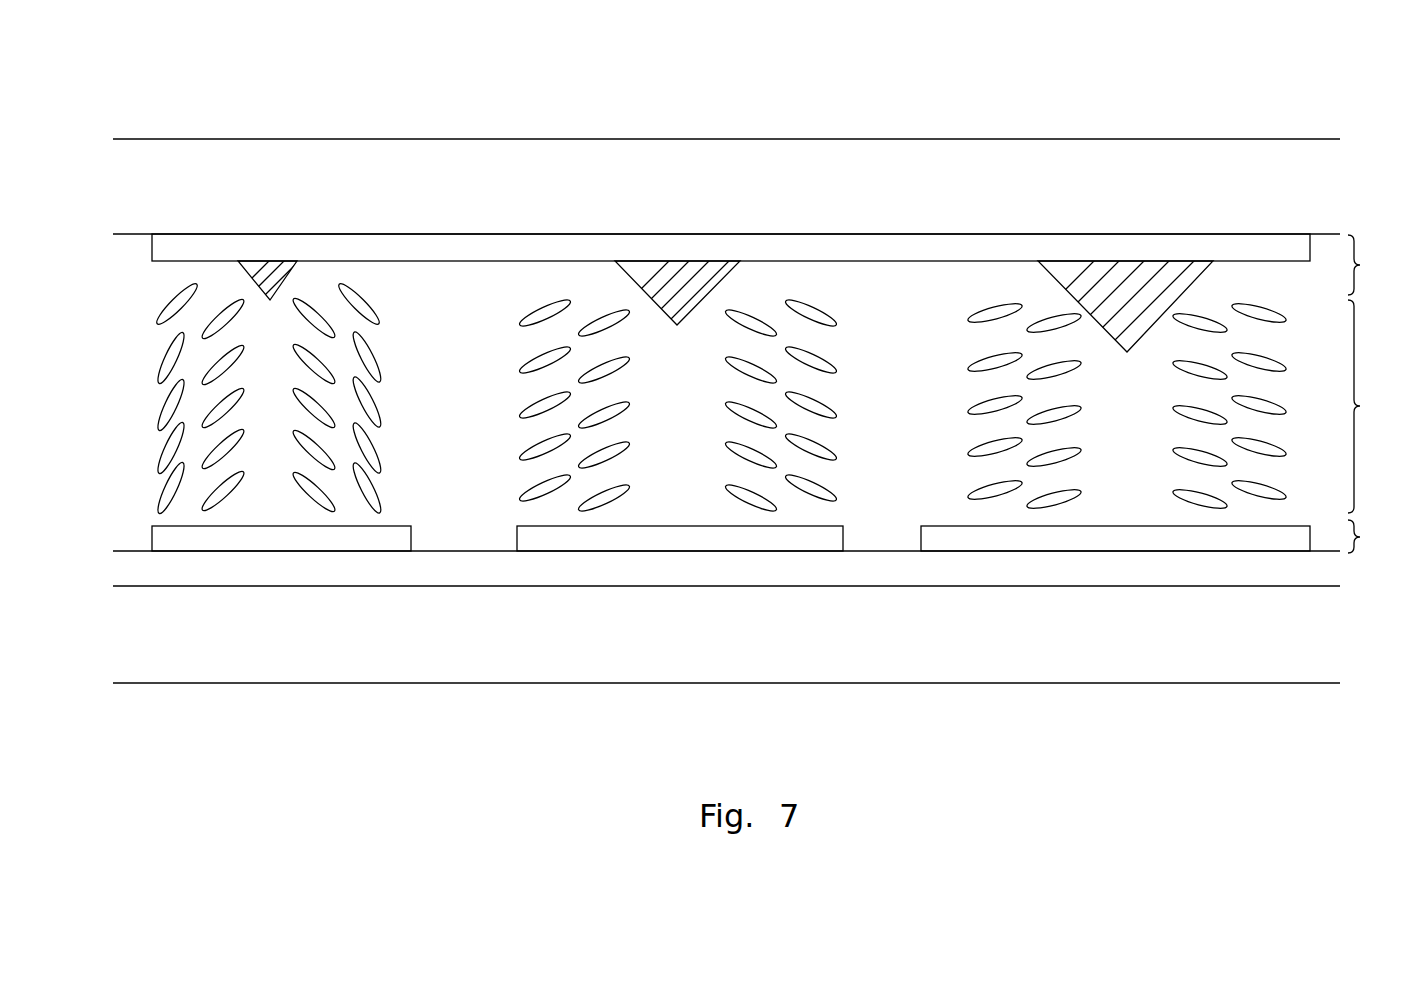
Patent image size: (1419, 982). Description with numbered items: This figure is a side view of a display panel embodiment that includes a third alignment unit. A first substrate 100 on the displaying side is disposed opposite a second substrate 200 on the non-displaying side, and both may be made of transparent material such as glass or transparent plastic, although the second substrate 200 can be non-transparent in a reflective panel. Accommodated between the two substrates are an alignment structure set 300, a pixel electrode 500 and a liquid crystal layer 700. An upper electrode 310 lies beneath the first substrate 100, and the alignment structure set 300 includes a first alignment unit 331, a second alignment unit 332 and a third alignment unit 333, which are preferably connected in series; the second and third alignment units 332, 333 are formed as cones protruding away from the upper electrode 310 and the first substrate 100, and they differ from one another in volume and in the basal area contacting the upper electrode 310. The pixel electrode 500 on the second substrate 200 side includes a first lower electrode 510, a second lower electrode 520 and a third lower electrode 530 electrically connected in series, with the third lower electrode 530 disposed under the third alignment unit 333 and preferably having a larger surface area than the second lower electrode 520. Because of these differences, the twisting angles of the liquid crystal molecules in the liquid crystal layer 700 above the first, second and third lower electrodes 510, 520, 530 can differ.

The first substrate 100 is at (912, 160).
The second substrate 200 is at (950, 672).
The alignment structure set 300 is at (1375, 265).
The upper electrode 310 is at (493, 245).
The first alignment unit 331 is at (271, 273).
The second alignment unit 332 is at (676, 268).
The third alignment unit 333 is at (1127, 268).
The pixel electrode 500 is at (1375, 536).
The first lower electrode 510 is at (257, 538).
The second lower electrode 520 is at (605, 538).
The third lower electrode 530 is at (1118, 540).
The liquid crystal layer 700 is at (777, 398).